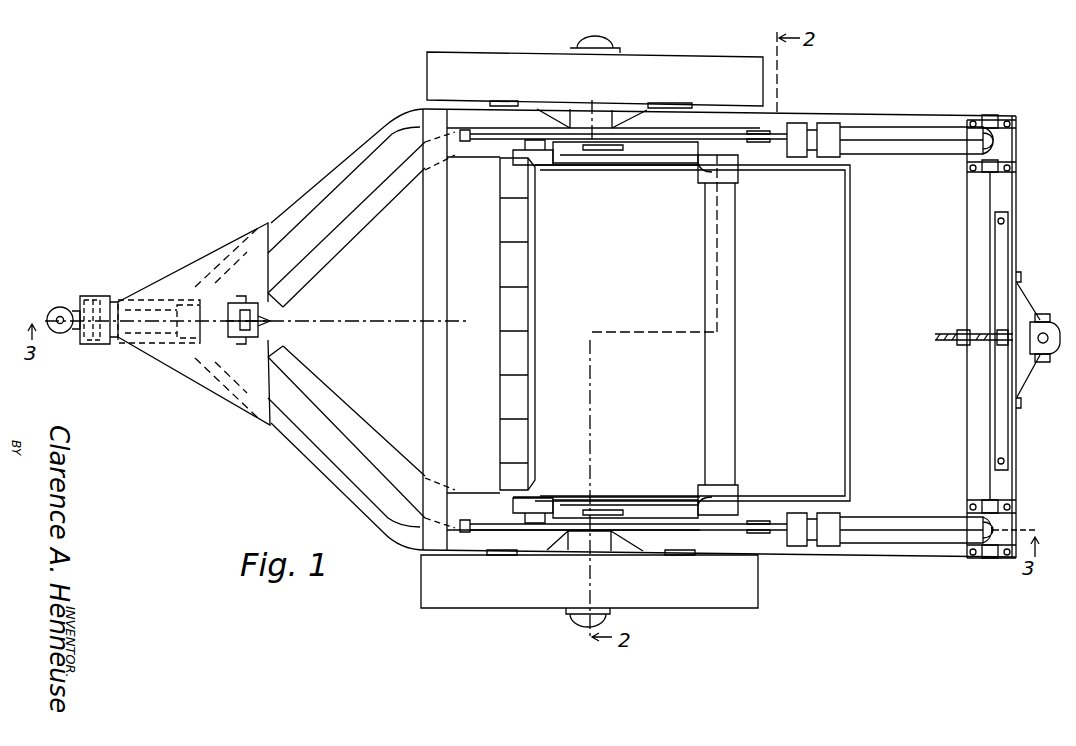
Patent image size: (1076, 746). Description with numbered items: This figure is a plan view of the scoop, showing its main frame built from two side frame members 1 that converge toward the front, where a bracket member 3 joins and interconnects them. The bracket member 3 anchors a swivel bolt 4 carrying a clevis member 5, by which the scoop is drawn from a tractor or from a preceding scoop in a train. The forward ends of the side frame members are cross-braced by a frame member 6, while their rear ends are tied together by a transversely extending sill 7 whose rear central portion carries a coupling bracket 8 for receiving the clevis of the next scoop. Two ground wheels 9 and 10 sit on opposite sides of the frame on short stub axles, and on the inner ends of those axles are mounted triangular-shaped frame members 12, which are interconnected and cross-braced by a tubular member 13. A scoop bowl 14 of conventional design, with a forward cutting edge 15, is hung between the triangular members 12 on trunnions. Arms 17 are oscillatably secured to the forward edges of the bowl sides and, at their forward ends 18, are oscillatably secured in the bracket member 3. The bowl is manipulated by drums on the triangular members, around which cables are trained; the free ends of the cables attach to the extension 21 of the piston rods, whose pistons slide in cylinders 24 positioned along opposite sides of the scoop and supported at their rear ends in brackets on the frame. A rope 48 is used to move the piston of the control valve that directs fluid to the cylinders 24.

The side frame member 1 is at (780, 545).
The bracket member 3 is at (190, 370).
The swivel bolt 4 is at (101, 297).
The clevis member 5 is at (56, 306).
The frame member 6 is at (420, 327).
The sill 7 is at (990, 200).
The coupling bracket 8 is at (1043, 314).
The ground wheel 9 is at (430, 588).
The ground wheel 10 is at (432, 72).
The triangular-shaped frame member 12 is at (632, 155).
The tubular member 13 is at (733, 354).
The scoop bowl 14 is at (845, 288).
The cutting edge 15 is at (520, 312).
The arm 17 is at (366, 218).
The forward ends of arms 18 is at (268, 322).
The extension of piston rod 21 is at (745, 140).
The cylinder 24 is at (906, 148).
The rope 48 is at (940, 342).